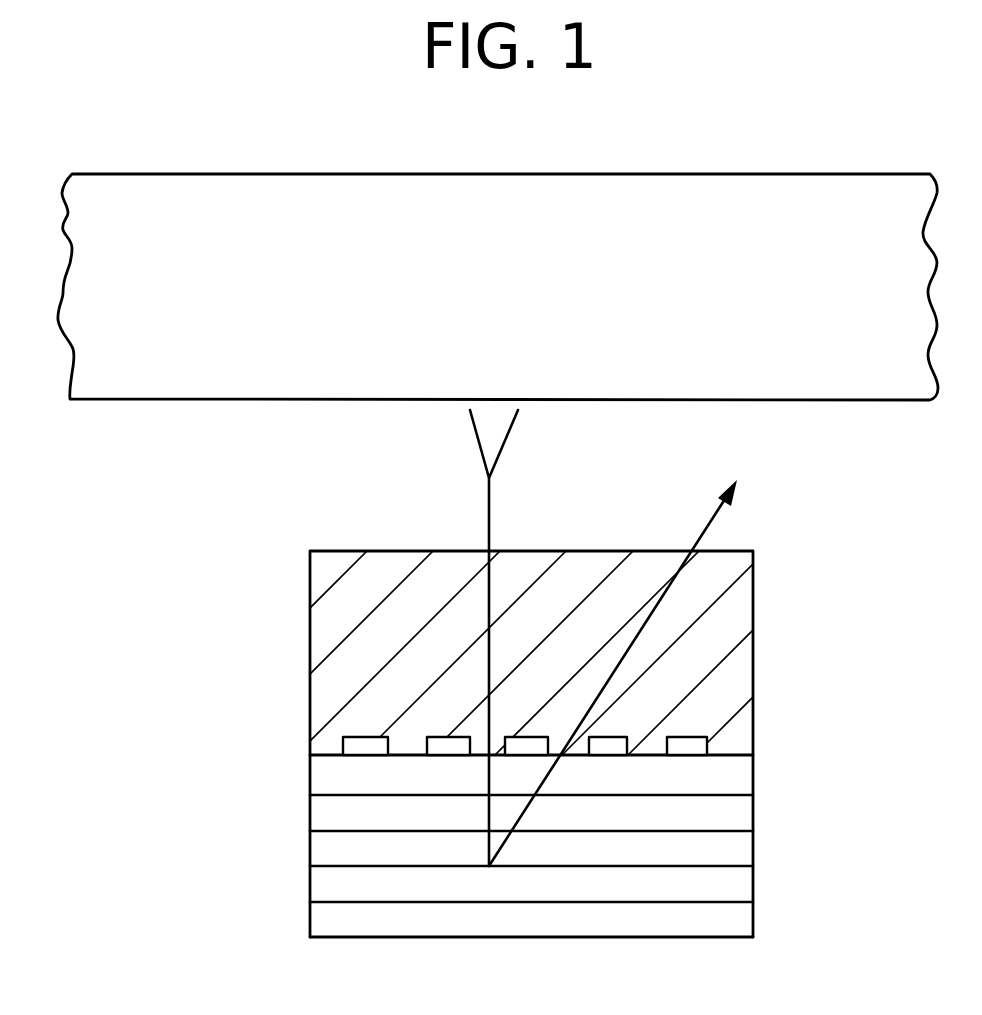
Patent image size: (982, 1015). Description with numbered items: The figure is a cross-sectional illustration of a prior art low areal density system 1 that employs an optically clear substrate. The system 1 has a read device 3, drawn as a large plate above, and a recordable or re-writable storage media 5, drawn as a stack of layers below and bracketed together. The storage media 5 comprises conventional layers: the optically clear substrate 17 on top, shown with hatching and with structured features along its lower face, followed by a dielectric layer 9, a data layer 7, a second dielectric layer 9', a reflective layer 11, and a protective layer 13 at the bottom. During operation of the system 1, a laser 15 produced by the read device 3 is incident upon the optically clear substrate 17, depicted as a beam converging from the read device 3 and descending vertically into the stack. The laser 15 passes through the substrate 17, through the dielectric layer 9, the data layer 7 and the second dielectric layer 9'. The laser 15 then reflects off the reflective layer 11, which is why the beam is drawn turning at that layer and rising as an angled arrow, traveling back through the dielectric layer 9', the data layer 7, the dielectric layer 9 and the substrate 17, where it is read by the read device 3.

The low areal density system 1 is at (150, 787).
The read device 3 is at (517, 307).
The storage media 5 is at (770, 545).
The data layer 7 is at (322, 814).
The dielectric layer 9 is at (486, 766).
The second dielectric layer 9' is at (486, 852).
The reflective layer 11 is at (322, 885).
The protective layer 13 is at (322, 915).
The laser 15 is at (490, 498).
The optically clear substrate 17 is at (308, 650).